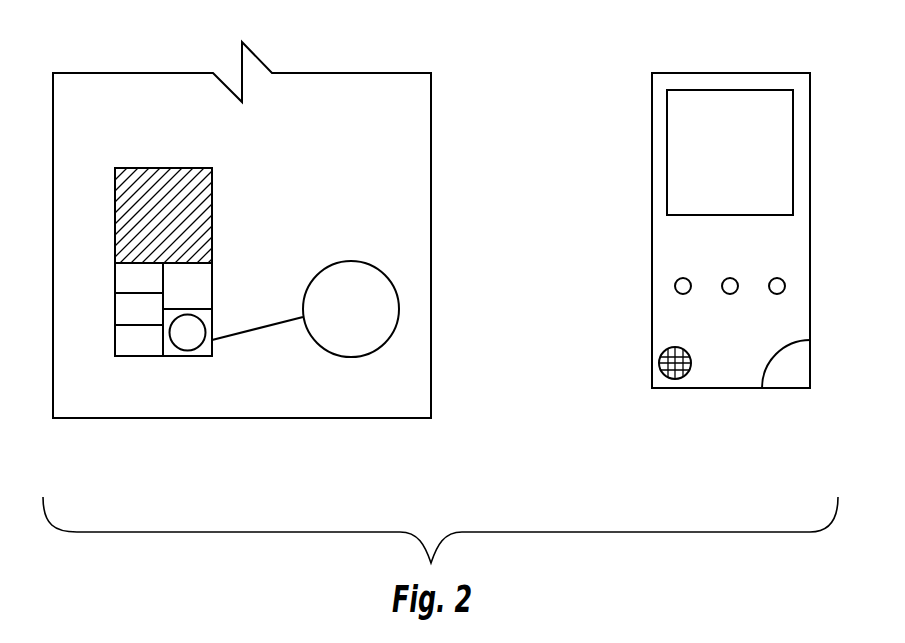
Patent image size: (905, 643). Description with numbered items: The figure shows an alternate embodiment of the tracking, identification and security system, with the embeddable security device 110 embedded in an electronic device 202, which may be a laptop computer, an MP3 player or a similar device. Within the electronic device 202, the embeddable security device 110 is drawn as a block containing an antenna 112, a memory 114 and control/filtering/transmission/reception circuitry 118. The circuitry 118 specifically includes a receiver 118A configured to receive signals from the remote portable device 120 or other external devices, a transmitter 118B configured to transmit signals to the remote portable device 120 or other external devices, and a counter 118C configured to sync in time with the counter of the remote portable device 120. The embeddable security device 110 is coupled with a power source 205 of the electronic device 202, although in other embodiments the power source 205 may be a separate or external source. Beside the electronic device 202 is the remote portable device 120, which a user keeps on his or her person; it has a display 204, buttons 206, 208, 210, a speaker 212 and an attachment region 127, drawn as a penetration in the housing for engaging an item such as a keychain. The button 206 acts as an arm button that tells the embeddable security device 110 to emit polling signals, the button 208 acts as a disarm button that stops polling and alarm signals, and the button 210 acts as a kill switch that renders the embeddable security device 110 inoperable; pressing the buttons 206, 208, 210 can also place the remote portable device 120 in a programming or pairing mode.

The electronic device 202 is at (432, 150).
The embeddable security device 110 is at (184, 335).
The antenna 112 is at (158, 168).
The memory 114 is at (212, 287).
The control/filtering/transmission/reception circuitry 118 is at (135, 362).
The receiver 118A is at (127, 342).
The transmitter 118B is at (127, 312).
The counter 118C is at (127, 280).
The power source 205 is at (350, 298).
The remote portable device 120 is at (737, 73).
The display 204 is at (767, 157).
The button 206 is at (683, 277).
The button 208 is at (732, 277).
The button 210 is at (778, 277).
The speaker 212 is at (672, 380).
The attachment region 127 is at (787, 382).